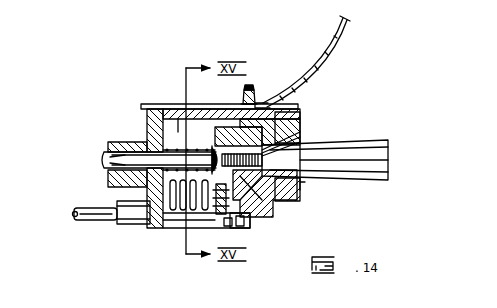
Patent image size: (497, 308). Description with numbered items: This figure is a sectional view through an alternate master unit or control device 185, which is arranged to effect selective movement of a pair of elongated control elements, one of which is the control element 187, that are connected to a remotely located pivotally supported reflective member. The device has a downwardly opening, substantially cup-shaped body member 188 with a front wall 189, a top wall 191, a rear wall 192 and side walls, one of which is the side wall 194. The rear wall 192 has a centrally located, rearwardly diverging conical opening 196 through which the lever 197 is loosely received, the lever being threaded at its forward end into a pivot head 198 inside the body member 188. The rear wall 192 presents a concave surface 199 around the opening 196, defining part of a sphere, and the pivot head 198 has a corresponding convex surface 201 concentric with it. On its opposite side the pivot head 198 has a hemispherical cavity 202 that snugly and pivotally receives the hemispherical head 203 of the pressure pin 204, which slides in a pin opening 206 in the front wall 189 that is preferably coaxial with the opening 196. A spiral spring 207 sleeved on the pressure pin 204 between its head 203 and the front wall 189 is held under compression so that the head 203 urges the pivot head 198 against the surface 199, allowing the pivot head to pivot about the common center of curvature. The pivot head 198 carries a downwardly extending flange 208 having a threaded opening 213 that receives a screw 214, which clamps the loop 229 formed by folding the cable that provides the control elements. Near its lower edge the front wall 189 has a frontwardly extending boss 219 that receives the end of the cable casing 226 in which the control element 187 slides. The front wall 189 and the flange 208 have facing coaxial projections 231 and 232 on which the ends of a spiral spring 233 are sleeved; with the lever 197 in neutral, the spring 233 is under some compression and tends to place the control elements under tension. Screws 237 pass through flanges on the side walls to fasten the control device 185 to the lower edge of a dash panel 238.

The master unit or control device 185 is at (128, 104).
The control element 187 is at (72, 218).
The body member 188 is at (296, 110).
The front wall 189 is at (148, 128).
The top wall 191 is at (204, 114).
The rear wall 192 is at (300, 119).
The side wall 194 is at (162, 106).
The conical opening 196 is at (304, 138).
The lever 197 is at (380, 152).
The pivot head 198 is at (276, 202).
The concave surface 199 is at (302, 185).
The convex surface 201 is at (241, 106).
The hemispherical cavity 202 is at (259, 185).
The hemispherical head 203 is at (211, 152).
The pressure pin 204 is at (108, 162).
The pin opening 206 is at (104, 156).
The spiral spring 207 is at (165, 193).
The flange 208 is at (254, 226).
The threaded opening 213 is at (230, 228).
The screw 214 is at (246, 228).
The boss 219 is at (126, 226).
The cable casing 226 is at (80, 210).
The loop 229 is at (173, 212).
The projection 231 is at (156, 230).
The projection 232 is at (218, 224).
The spiral spring 233 is at (194, 212).
The screw 237 is at (252, 96).
The dash panel 238 is at (318, 56).